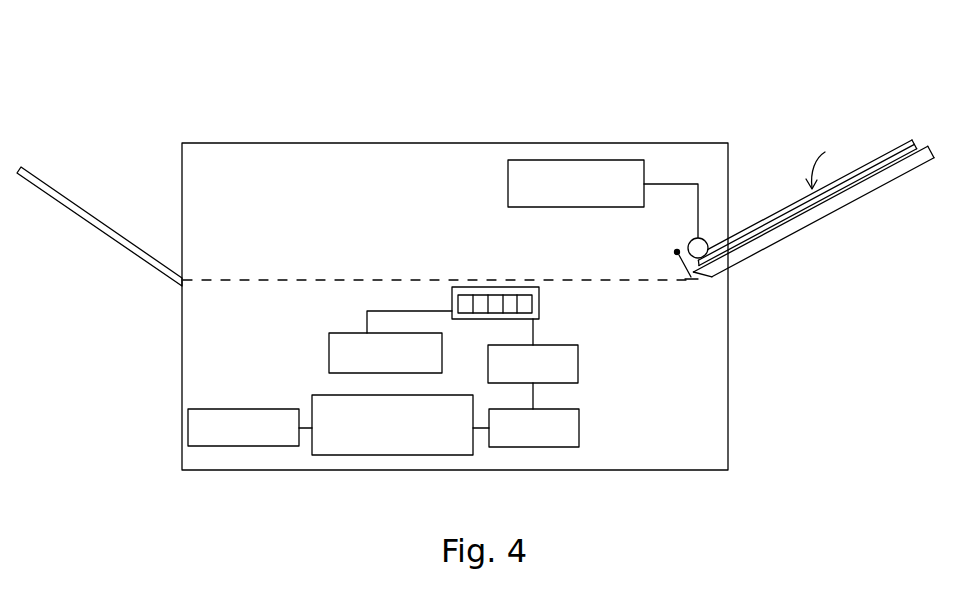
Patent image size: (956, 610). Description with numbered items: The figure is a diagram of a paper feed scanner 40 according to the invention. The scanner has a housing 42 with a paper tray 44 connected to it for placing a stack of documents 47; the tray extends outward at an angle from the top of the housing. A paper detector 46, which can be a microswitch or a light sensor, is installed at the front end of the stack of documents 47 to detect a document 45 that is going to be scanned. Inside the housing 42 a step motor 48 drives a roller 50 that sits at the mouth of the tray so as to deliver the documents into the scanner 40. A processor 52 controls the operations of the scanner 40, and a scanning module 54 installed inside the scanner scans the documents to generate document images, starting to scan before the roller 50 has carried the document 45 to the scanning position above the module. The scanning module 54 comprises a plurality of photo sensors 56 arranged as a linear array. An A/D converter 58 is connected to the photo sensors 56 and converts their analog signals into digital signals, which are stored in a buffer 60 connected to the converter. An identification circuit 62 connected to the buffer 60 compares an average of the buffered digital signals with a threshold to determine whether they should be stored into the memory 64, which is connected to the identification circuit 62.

The paper feed scanner 40 is at (653, 88).
The housing 42 is at (367, 143).
The paper tray 44 is at (894, 172).
The document 45 is at (903, 137).
The paper detector 46 is at (678, 267).
The stack of documents 47 is at (830, 163).
The step motor 48 is at (508, 183).
The roller 50 is at (698, 248).
The processor 52 is at (328, 352).
The scanning module 54 is at (540, 320).
The photo sensors 56 is at (540, 304).
The A/D converter 58 is at (578, 367).
The buffer 60 is at (565, 448).
The identification circuit 62 is at (338, 457).
The memory 64 is at (252, 447).